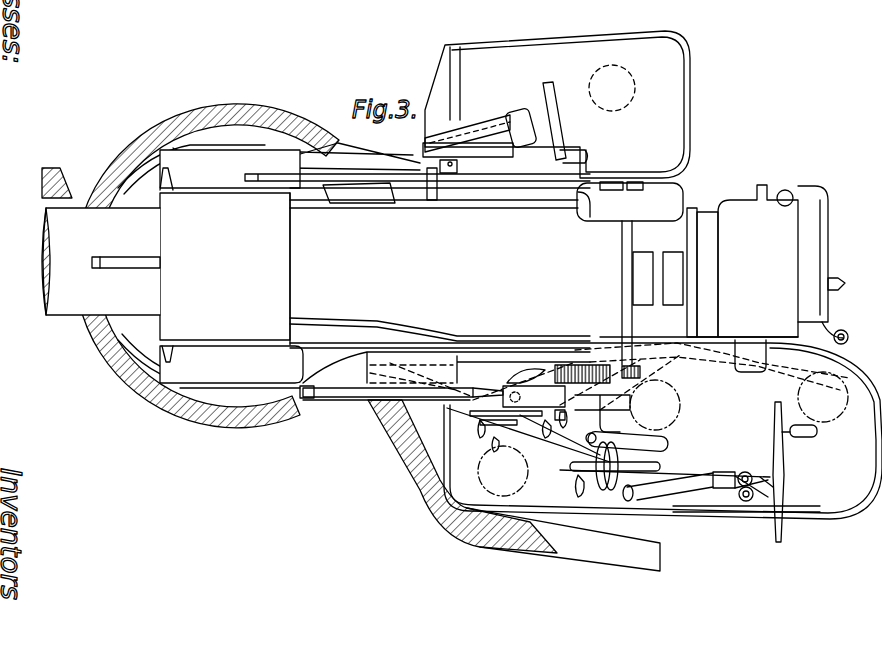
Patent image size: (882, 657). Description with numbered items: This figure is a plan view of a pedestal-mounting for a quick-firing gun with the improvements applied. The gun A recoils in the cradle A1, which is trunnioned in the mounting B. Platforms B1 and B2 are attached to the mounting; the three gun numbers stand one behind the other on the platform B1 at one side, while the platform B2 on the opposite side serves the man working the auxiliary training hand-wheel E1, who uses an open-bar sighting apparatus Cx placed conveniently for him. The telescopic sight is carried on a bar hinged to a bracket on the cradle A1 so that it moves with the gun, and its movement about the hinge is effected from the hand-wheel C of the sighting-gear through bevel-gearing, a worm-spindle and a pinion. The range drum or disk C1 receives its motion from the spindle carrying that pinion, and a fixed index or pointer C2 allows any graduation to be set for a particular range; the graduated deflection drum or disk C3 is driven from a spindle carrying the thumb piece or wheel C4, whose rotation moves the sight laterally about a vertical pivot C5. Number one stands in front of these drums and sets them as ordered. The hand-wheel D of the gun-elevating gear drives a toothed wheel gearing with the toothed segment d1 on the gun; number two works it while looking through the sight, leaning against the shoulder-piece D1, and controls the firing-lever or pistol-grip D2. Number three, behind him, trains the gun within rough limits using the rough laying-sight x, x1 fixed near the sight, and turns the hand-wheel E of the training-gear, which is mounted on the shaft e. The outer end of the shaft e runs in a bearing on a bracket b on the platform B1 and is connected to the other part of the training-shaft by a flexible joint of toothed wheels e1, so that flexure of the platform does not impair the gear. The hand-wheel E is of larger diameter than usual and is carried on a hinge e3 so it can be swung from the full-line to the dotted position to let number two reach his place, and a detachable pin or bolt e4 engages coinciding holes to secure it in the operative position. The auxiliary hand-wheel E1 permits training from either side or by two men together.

The gun A is at (101, 261).
The cradle A1 is at (320, 203).
The mounting B is at (210, 266).
The platform B1 is at (586, 431).
The platform B2 is at (557, 126).
The sighting apparatus Cx is at (272, 182).
The hand-wheel of the sighting-gear C is at (528, 424).
The range drum or disk C1 is at (352, 392).
The fixed index or pointer C2 is at (563, 430).
The graduated deflection drum or disk C3 is at (545, 432).
The thumb piece or wheel C4 is at (558, 420).
The vertical pivot C5 is at (526, 376).
The hand-wheel of the gun-elevating gear D is at (622, 469).
The shoulder-piece D1 is at (665, 446).
The firing-lever or pistol-grip D2 is at (627, 405).
The hand-wheel of the training-gear E is at (784, 473).
The auxiliary training hand-wheel E1 is at (505, 122).
The bracket b is at (723, 470).
The toothed segment d1 is at (562, 365).
The shaft e is at (665, 477).
The toothed wheels e1 is at (633, 480).
The hinge e3 is at (744, 491).
The detachable pin or bolt e4 is at (746, 472).
The rough laying-sight x is at (478, 396).
The rough laying-sight x1 is at (592, 372).